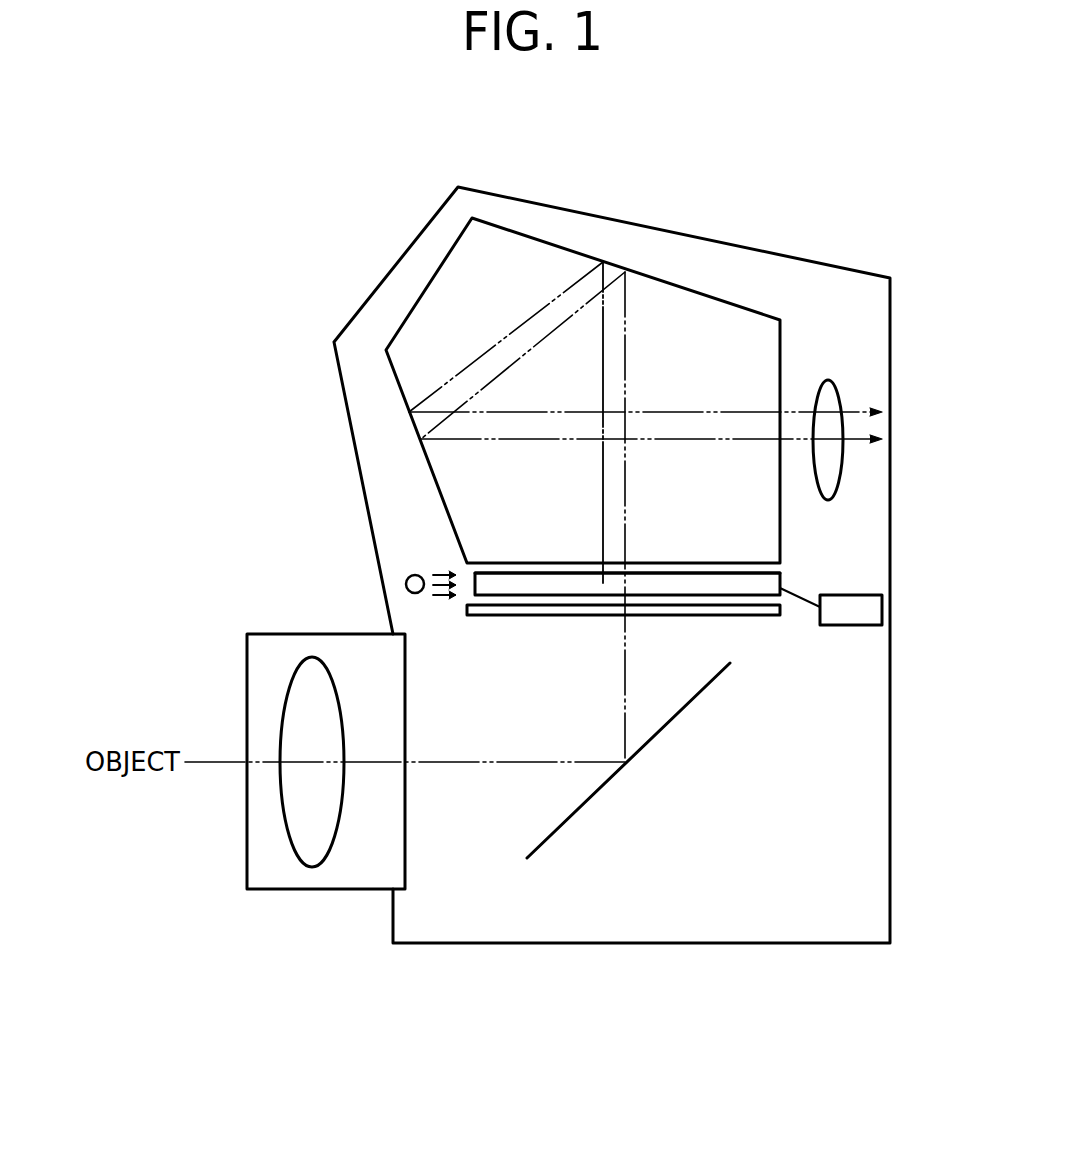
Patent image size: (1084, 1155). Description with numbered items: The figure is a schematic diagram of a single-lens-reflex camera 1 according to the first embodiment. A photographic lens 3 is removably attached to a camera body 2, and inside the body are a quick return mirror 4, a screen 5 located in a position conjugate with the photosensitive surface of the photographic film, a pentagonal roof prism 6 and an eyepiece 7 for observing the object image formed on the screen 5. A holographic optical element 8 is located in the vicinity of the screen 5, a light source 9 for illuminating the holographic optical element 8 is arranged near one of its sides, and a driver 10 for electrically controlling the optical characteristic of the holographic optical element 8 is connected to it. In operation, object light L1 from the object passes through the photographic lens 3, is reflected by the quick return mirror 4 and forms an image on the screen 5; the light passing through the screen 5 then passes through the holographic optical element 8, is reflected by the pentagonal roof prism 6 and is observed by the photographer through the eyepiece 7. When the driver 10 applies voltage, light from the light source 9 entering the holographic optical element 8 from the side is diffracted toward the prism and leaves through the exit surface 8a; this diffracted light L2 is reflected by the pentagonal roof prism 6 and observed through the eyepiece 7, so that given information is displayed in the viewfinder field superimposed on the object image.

The single-lens-reflex camera 1 is at (723, 216).
The camera body 2 is at (397, 263).
The photographic lens 3 is at (316, 890).
The quick return mirror 4 is at (545, 840).
The screen 5 is at (467, 613).
The pentagonal roof prism 6 is at (537, 239).
The eyepiece 7 is at (841, 393).
The holographic optical element 8 is at (781, 580).
The exit surface 8a is at (773, 573).
The light source 9 is at (406, 584).
The driver 10 is at (850, 626).
The object light L1 is at (214, 760).
The diffracted light L2 is at (603, 515).